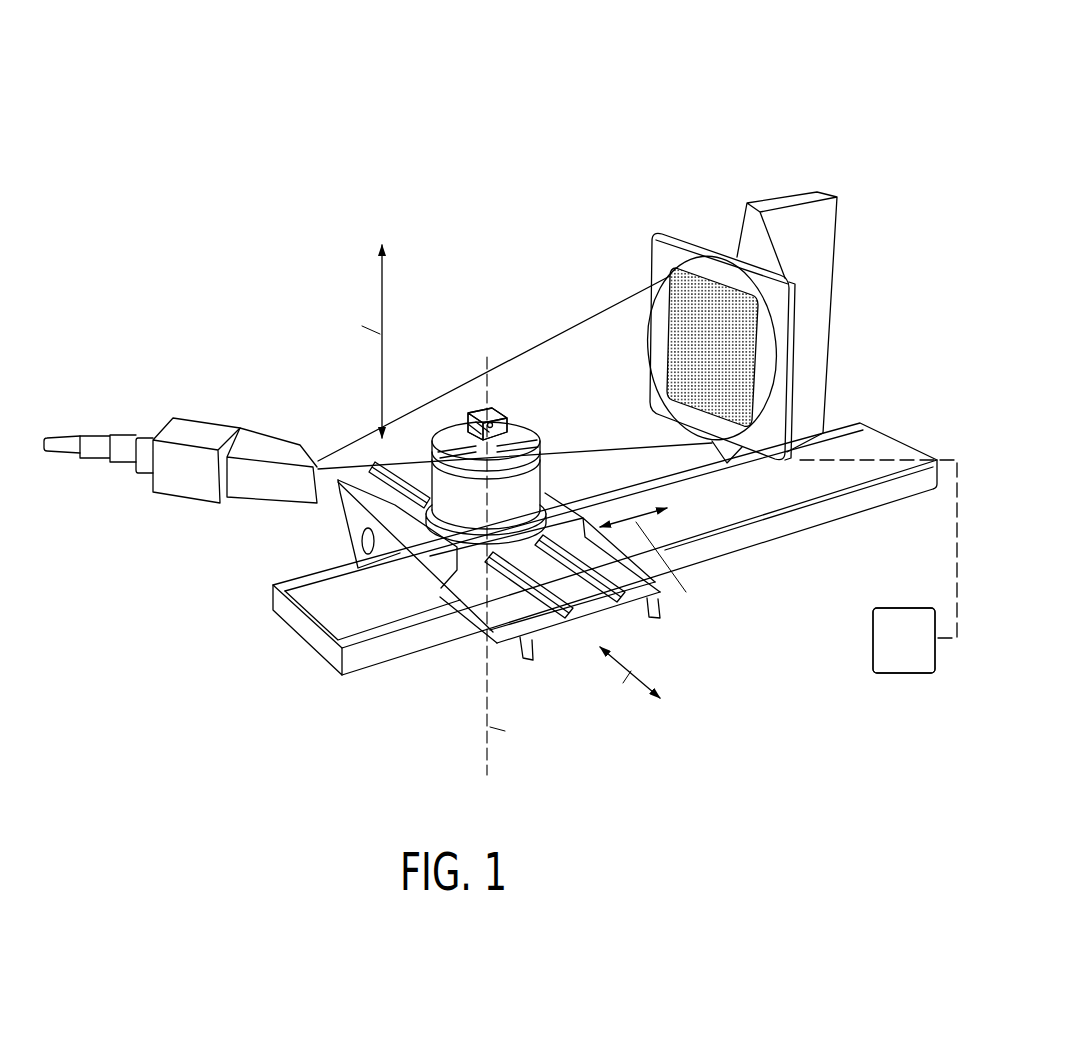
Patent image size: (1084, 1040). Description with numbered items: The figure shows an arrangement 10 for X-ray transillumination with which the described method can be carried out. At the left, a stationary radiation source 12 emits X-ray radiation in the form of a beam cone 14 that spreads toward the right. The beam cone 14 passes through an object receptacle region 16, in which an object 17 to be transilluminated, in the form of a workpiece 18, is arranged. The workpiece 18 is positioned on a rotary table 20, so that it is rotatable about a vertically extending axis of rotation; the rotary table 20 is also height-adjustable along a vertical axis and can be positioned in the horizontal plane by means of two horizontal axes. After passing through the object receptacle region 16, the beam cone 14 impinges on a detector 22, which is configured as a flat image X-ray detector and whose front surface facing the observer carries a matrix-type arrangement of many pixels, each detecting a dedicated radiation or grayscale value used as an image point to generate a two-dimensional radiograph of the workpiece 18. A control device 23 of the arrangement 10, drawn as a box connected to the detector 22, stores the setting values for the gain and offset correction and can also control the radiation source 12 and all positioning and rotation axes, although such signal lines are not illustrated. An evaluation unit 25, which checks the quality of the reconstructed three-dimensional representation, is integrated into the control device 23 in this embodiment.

The arrangement 10 is at (578, 106).
The stationary radiation source 12 is at (178, 458).
The beam cone 14 is at (578, 343).
The object receptacle region 16 is at (487, 352).
The object 17 is at (475, 417).
The workpiece 18 is at (487, 424).
The rotary table 20 is at (541, 474).
The detector 22 is at (665, 253).
The control device 23 is at (880, 673).
The evaluation unit 25 is at (904, 640).